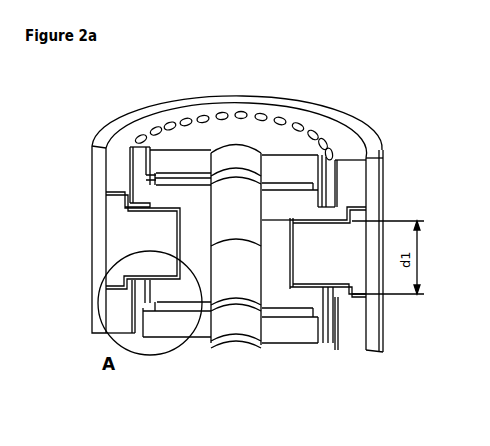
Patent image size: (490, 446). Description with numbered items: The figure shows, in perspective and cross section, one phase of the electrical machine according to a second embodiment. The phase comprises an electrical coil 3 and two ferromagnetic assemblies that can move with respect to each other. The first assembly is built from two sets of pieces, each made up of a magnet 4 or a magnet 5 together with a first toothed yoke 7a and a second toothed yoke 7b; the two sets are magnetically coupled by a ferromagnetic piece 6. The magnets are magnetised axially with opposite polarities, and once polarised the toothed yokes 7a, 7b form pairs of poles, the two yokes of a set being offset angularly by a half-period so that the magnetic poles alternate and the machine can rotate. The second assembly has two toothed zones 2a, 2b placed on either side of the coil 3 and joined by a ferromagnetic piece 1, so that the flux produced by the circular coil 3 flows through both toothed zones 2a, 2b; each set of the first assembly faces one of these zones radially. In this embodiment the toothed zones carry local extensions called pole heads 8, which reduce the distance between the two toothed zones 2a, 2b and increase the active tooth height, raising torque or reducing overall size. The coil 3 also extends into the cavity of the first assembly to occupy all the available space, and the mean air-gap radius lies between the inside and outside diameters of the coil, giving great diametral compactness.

The ferromagnetic piece 1 is at (96, 151).
The toothed zone 2a is at (117, 174).
The toothed zone 2b is at (117, 314).
The electrical coil 3 is at (117, 245).
The magnet 4 is at (170, 307).
The magnet 5 is at (168, 179).
The ferromagnetic piece 6 is at (200, 256).
The first toothed yoke 7a is at (297, 208).
The second toothed yoke 7b is at (317, 208).
The pole heads 8 is at (344, 203).